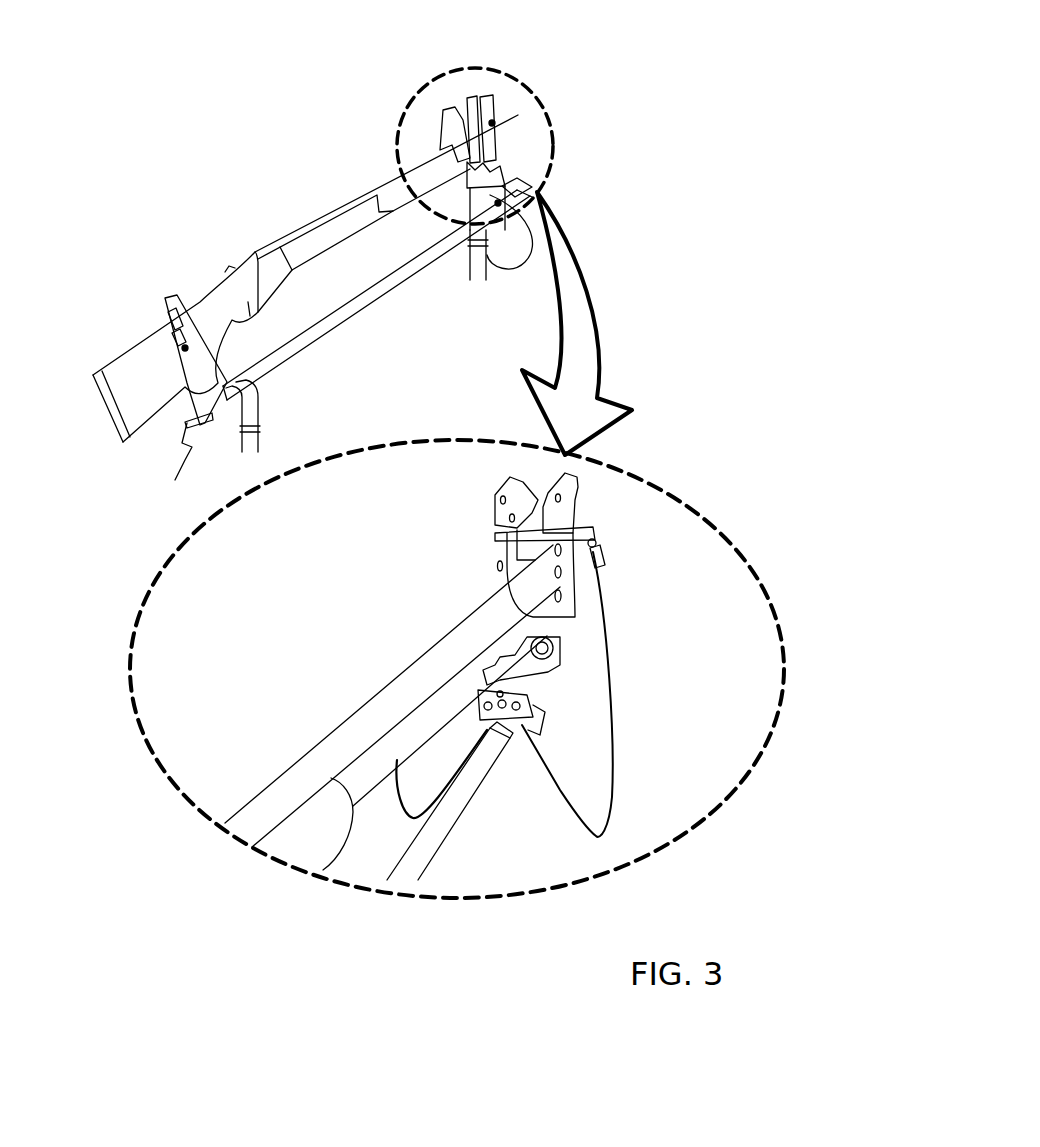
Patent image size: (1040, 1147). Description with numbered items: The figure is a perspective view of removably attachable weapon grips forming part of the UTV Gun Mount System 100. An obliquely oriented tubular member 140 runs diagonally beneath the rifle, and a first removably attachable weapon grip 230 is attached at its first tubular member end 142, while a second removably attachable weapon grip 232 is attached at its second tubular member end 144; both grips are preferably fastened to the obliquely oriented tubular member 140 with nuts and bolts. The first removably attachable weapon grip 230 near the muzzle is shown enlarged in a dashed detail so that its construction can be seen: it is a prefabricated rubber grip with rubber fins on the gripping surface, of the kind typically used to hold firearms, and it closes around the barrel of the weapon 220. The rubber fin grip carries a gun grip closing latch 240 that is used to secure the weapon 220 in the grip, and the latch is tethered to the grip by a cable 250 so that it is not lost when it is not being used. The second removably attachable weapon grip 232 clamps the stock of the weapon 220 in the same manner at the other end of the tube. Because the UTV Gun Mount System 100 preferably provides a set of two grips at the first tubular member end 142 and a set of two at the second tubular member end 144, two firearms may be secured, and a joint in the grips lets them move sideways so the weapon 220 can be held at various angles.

The UTV Gun Mount System 100 is at (600, 155).
The obliquely oriented tubular member 140 is at (378, 298).
The first tubular member end 142 is at (535, 188).
The second tubular member end 144 is at (175, 480).
The weapon 220 is at (265, 785).
The first removably attachable weapon grip 230 is at (448, 100).
The second removably attachable weapon grip 232 is at (172, 295).
The gun grip closing latch 240 is at (532, 538).
The cable 250 is at (513, 265).